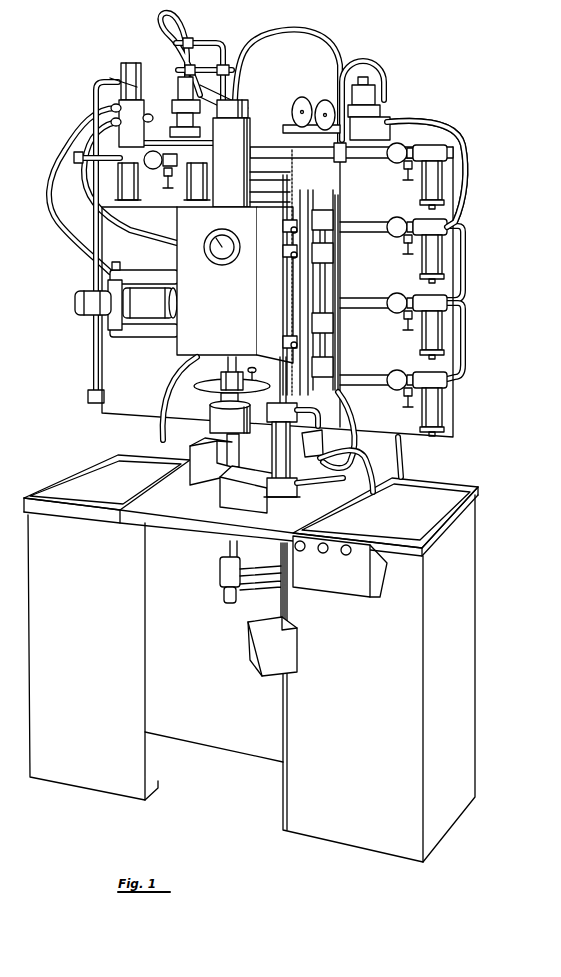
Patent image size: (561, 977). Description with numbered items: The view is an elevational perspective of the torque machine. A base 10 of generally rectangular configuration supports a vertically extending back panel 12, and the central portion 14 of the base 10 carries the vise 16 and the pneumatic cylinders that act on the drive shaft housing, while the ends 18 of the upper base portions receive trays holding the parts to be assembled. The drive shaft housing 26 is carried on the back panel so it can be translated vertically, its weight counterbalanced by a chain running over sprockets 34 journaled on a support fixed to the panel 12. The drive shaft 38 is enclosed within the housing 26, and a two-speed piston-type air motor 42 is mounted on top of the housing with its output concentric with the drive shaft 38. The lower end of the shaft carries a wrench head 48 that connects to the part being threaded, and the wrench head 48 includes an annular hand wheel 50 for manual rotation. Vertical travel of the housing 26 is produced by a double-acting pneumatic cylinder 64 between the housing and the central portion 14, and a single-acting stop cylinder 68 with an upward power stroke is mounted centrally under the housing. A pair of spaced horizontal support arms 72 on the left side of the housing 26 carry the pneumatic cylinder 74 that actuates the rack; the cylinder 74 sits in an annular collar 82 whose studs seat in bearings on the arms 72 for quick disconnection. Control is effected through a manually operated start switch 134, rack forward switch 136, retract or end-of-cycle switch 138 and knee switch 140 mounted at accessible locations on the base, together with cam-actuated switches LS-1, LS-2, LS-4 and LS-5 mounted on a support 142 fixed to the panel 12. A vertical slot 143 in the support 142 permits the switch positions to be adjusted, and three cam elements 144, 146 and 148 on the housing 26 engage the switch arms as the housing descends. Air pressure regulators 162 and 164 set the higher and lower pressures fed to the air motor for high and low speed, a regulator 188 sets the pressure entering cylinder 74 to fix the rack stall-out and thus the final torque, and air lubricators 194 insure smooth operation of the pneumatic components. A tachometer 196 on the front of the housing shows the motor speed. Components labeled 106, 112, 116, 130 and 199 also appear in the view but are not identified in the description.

The base 10 is at (470, 618).
The back panel 12 is at (128, 408).
The central portion 14 is at (182, 512).
The vise 16 is at (210, 490).
The ends of the upper base portions 18 is at (122, 491).
The drive shaft housing 26 is at (224, 304).
The sprockets 34 is at (324, 100).
The drive shaft 38 is at (243, 368).
The air motor 42 is at (243, 170).
The wrench head device 48 is at (212, 418).
The annular hand wheel 50 is at (214, 390).
The pneumatic cylinder 64 is at (294, 470).
The stop cylinder 68 is at (226, 440).
The horizontal support arms 72 is at (165, 270).
The pneumatic cylinder 74 is at (75, 303).
The annular collar 82 is at (113, 331).
The shaft 106 is at (228, 546).
The coupling 112 is at (220, 578).
The arm 116 is at (280, 574).
The support post 130 is at (268, 588).
The start switch 134 is at (300, 551).
The rack forward switch 136 is at (323, 553).
The retract or end of cycle switch 138 is at (346, 555).
The knee switch 140 is at (272, 664).
The support 142 is at (330, 236).
The vertical slot 143 is at (328, 285).
The cam element 144 is at (292, 226).
The cam element 146 is at (292, 250).
The cam element 148 is at (293, 343).
The air pressure regulator 162 is at (403, 243).
The air pressure regulator 164 is at (404, 320).
The regulator 188 is at (403, 170).
The air lubricators 194 is at (447, 258).
The tachometer 196 is at (219, 234).
The air line 199 is at (445, 178).
The cam actuated switch LS-1 is at (330, 326).
The cam actuated switch LS-2 is at (330, 370).
The cam actuated switch LS-4 is at (330, 258).
The cam actuated switch LS-5 is at (332, 218).